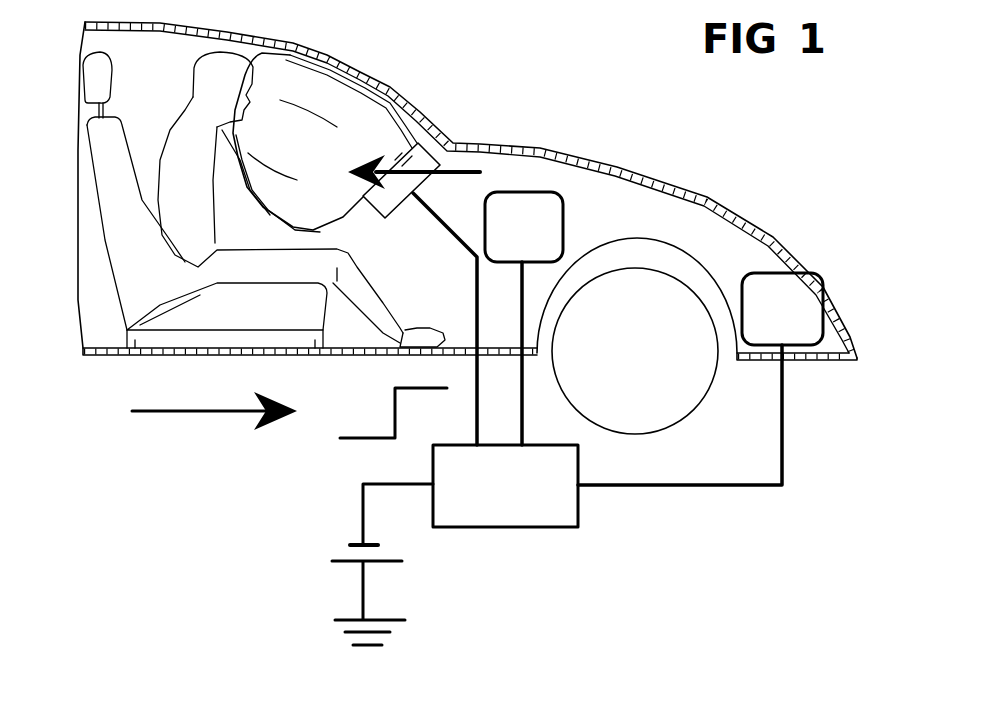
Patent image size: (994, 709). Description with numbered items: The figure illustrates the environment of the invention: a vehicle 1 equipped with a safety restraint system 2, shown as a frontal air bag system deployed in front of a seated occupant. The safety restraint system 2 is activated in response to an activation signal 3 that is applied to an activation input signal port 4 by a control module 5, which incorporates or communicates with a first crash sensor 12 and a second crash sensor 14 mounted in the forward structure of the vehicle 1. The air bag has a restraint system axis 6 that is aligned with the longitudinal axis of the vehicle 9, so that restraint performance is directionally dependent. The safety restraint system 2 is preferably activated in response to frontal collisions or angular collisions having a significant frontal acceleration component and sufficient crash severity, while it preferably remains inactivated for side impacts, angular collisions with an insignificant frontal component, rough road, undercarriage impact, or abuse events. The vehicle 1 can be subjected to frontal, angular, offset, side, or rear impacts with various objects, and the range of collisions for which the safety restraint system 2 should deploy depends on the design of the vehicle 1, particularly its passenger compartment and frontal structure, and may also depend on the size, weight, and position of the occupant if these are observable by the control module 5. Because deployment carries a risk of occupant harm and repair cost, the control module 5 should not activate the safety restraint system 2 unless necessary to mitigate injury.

The vehicle 1 is at (608, 166).
The safety restraint system 2 is at (368, 210).
The activation signal 3 is at (477, 380).
The activation input signal port 4 is at (413, 193).
The control module 5 is at (547, 527).
The restraint system axis 6 is at (440, 172).
The longitudinal axis of the vehicle 9 is at (172, 413).
The first crash sensor 12 is at (565, 230).
The second crash sensor 14 is at (770, 277).